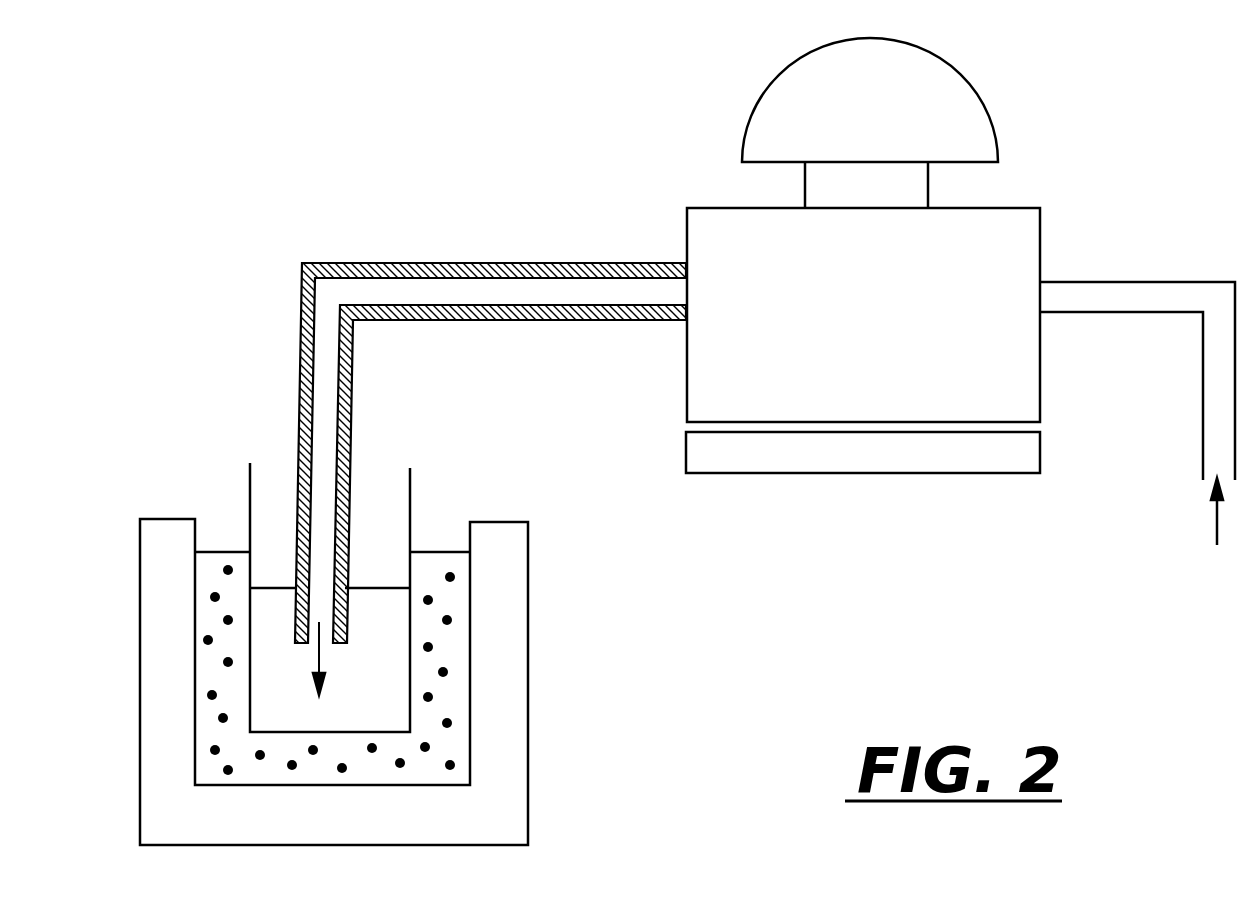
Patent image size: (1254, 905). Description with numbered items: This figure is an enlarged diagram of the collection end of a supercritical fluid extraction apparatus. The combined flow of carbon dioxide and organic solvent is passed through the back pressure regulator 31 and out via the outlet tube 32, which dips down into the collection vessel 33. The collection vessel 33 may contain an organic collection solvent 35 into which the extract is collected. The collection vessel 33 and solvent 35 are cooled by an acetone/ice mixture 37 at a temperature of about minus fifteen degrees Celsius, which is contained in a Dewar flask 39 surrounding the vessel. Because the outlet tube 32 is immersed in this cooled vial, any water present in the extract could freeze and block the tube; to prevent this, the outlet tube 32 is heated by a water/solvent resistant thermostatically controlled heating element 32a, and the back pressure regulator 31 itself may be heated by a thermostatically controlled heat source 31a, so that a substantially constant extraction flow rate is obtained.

The back pressure regulator 31 is at (1017, 260).
The thermostatically controlled heat source 31a is at (980, 453).
The outlet tube 32 is at (388, 293).
The thermostatically controlled heating element 32a is at (525, 263).
The collection vessel 33 is at (248, 488).
The organic collection solvent 35 is at (385, 685).
The acetone/ice mixture 37 is at (447, 620).
The Dewar flask 39 is at (508, 780).